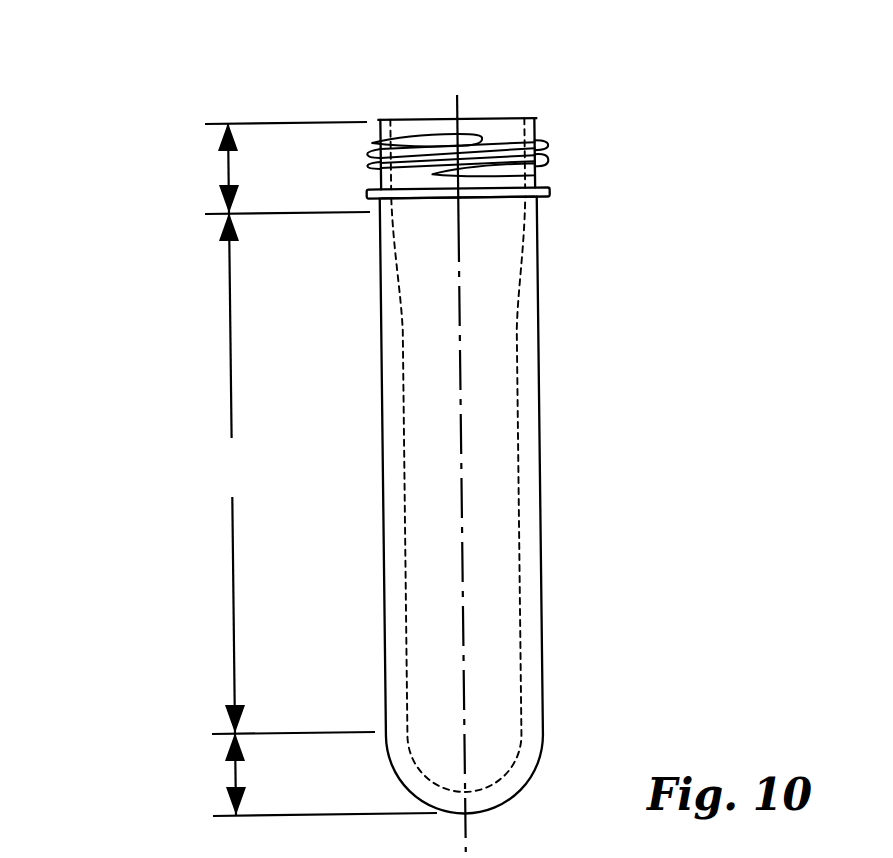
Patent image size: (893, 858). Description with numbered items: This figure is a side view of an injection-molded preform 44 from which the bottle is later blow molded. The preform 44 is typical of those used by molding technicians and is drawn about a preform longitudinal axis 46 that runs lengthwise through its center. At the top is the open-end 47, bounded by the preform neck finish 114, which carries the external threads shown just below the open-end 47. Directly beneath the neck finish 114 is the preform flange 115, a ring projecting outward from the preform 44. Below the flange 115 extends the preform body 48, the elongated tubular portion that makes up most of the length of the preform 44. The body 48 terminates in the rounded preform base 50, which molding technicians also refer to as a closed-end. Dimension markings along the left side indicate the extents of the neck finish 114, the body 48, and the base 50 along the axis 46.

The preform 44 is at (608, 489).
The preform longitudinal axis 46 is at (462, 107).
The open-end 47 is at (500, 117).
The preform body 48 is at (292, 473).
The preform base 50 is at (233, 777).
The preform neck finish 114 is at (227, 167).
The preform flange 115 is at (555, 192).